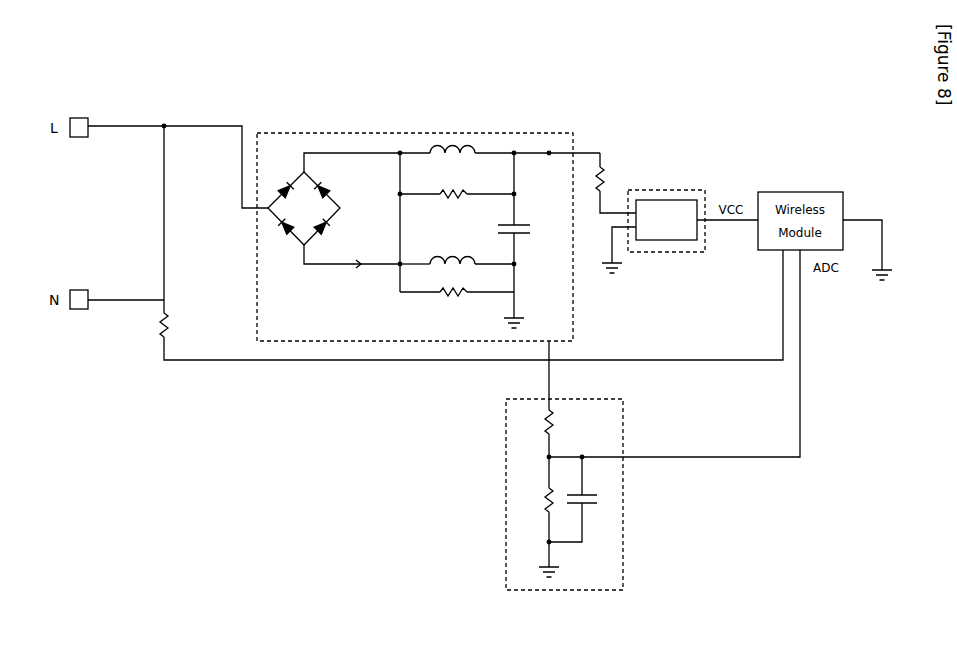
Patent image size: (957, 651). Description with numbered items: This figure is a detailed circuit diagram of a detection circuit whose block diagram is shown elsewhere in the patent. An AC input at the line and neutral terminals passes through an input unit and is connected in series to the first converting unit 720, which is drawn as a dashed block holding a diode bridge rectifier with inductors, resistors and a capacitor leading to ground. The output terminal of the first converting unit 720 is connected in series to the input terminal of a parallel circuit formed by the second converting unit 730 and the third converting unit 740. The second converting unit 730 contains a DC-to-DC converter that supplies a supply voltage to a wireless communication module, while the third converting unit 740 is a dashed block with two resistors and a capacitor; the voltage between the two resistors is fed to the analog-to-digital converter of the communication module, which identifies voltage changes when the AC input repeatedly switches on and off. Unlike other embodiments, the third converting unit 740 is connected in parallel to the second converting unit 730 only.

The first converting unit 720 is at (472, 133).
The second converting unit 730 is at (671, 190).
The third converting unit 740 is at (623, 430).